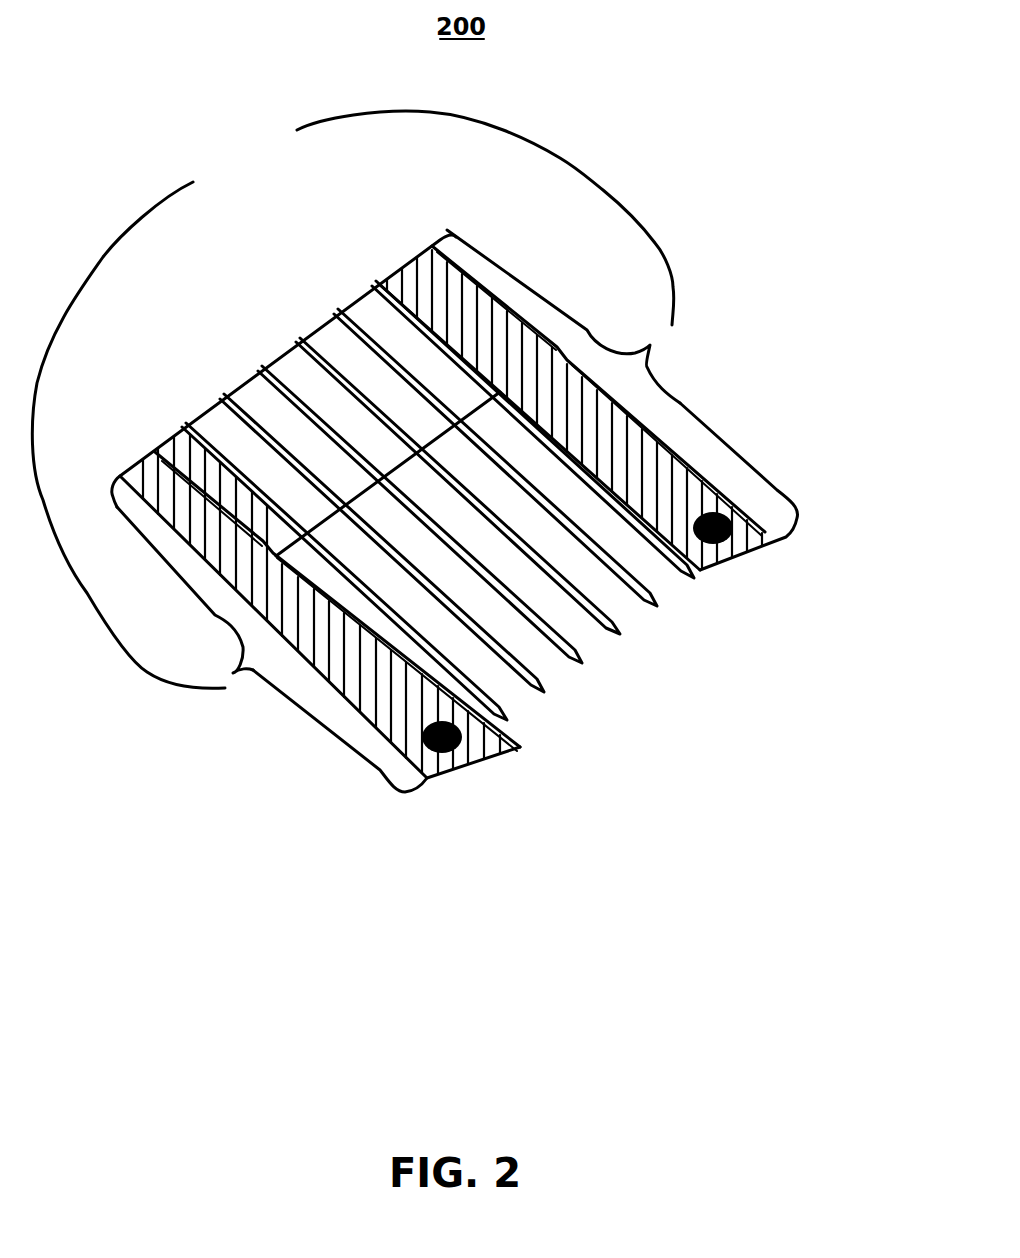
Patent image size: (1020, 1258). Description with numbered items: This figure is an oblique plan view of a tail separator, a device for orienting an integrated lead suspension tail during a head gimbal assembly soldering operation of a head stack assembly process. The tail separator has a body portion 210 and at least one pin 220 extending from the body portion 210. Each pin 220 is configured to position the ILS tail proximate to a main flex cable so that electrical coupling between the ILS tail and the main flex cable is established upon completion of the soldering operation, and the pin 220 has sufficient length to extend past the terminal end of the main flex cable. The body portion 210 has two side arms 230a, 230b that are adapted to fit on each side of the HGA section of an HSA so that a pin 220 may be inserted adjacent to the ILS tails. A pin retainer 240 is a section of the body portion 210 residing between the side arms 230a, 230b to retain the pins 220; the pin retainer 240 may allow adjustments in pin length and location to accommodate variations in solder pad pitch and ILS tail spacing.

The body portion 210 is at (263, 181).
The pin 220 is at (628, 637).
The side arm 230a is at (477, 771).
The side arm 230b is at (748, 553).
The pin retainer 240 is at (258, 392).